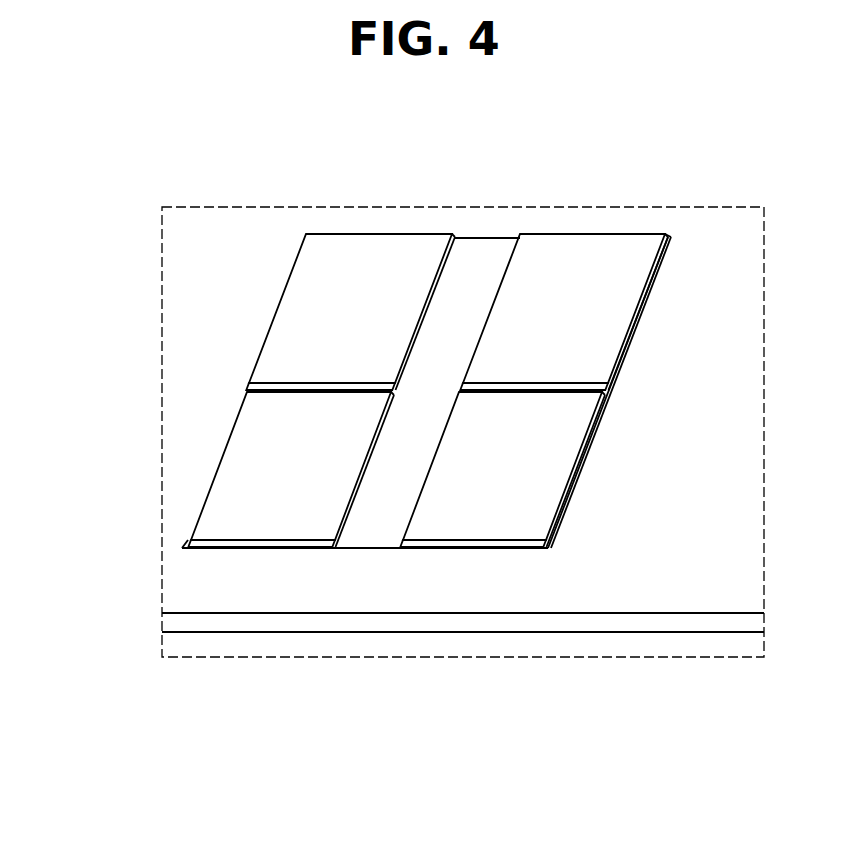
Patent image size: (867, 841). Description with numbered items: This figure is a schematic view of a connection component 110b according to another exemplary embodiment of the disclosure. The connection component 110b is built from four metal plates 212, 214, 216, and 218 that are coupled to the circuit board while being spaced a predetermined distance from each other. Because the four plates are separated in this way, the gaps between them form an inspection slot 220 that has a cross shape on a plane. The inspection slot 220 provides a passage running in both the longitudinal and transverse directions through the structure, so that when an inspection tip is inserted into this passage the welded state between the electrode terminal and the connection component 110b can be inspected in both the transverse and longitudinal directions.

The connection component 110b is at (186, 292).
The metal plate 212 is at (615, 315).
The metal plate 214 is at (565, 458).
The metal plate 216 is at (370, 257).
The metal plate 218 is at (263, 518).
The inspection slot 220 is at (374, 525).